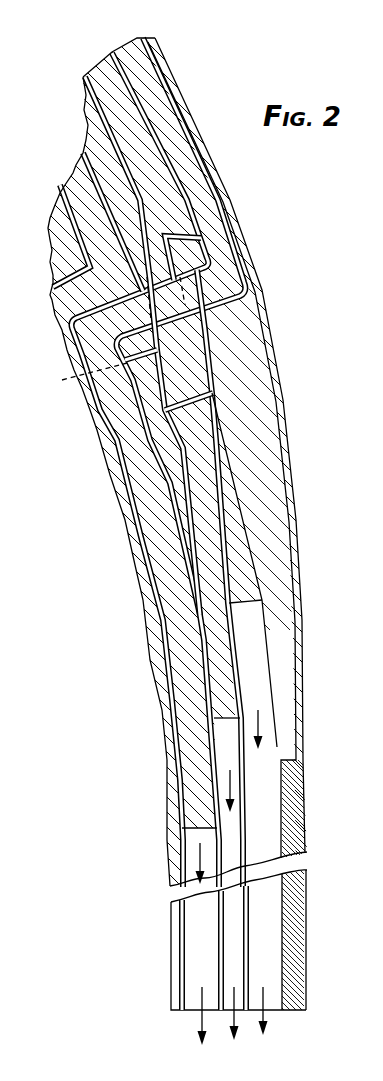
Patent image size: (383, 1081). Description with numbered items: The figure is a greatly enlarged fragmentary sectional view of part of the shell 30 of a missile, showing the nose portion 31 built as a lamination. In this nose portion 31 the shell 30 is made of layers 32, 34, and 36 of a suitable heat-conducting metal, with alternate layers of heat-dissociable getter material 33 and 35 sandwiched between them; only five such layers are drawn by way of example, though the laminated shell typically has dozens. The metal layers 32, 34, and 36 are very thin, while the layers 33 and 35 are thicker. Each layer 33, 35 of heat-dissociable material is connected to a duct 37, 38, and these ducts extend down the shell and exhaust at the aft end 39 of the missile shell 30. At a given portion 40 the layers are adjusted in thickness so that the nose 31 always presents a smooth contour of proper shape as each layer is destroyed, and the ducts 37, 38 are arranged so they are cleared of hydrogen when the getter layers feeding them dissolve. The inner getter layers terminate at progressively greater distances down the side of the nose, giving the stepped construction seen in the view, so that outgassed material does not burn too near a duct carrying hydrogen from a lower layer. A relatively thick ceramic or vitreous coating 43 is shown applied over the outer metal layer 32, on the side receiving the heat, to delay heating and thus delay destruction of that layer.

The shell 30 is at (320, 885).
The nose portion 31 is at (109, 454).
The outer metal layer 32 is at (153, 47).
The heat-dissociable material layer 33 is at (166, 119).
The metal layer 34 is at (149, 470).
The heat-dissociable material layer 35 is at (193, 462).
The metal layer 36 is at (225, 237).
The duct 37 is at (169, 856).
The duct 38 is at (277, 573).
The aft end 39 is at (248, 957).
The portion of adjusted layer thickness 40 is at (272, 459).
The ceramic coating 43 is at (230, 448).